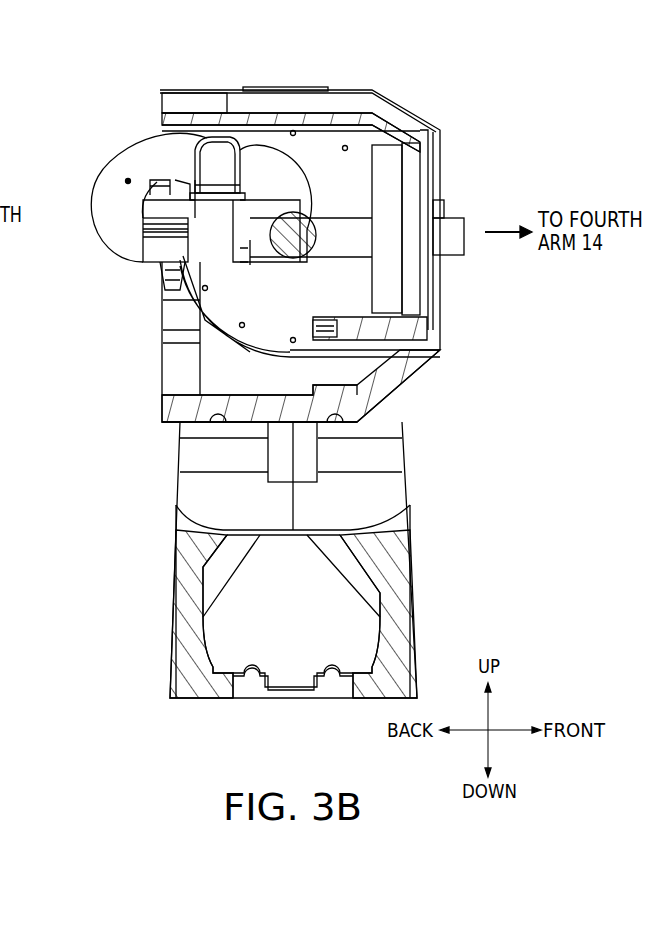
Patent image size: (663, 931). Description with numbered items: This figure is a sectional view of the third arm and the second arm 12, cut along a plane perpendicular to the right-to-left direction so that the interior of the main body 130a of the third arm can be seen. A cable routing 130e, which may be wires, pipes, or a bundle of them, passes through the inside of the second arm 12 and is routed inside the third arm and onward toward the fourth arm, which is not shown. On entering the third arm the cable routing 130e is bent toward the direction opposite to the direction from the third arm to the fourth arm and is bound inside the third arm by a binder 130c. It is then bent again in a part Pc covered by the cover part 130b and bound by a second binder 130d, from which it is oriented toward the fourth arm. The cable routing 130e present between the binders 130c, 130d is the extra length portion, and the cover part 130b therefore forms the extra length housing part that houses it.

The main body 130a is at (393, 98).
The cover part 130b is at (97, 167).
The binder 130c is at (247, 140).
The binder 130d is at (150, 262).
The cable routing 130e is at (455, 215).
The part covered by the cover part Pc is at (128, 181).
The second arm 12 is at (203, 700).